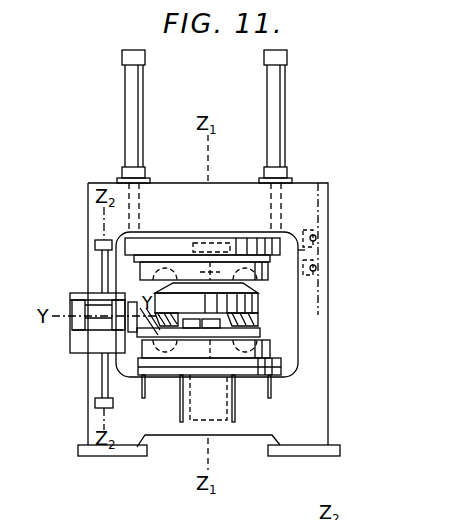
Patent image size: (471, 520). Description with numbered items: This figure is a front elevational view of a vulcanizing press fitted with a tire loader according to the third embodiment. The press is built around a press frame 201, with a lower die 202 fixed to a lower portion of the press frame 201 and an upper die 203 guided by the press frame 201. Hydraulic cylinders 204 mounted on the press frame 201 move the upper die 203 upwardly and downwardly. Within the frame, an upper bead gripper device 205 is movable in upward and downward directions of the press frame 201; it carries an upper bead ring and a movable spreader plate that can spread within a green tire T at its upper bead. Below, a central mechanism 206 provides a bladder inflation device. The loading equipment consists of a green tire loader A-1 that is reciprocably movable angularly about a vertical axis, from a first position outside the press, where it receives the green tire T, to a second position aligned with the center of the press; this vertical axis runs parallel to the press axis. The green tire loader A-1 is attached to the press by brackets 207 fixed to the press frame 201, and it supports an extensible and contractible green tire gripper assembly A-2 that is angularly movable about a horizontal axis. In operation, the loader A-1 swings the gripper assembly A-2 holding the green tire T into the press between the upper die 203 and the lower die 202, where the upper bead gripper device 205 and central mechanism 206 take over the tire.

The press frame 201 is at (325, 183).
The lower die 202 is at (273, 350).
The upper die 203 is at (280, 263).
The hydraulic cylinders 204 is at (283, 122).
The upper bead gripper device 205 is at (227, 252).
The central mechanism 206 is at (222, 412).
The brackets 207 is at (95, 243).
The green tire T is at (268, 306).
The green tire loader A-1 is at (70, 343).
The green tire gripper assembly A-2 is at (272, 318).